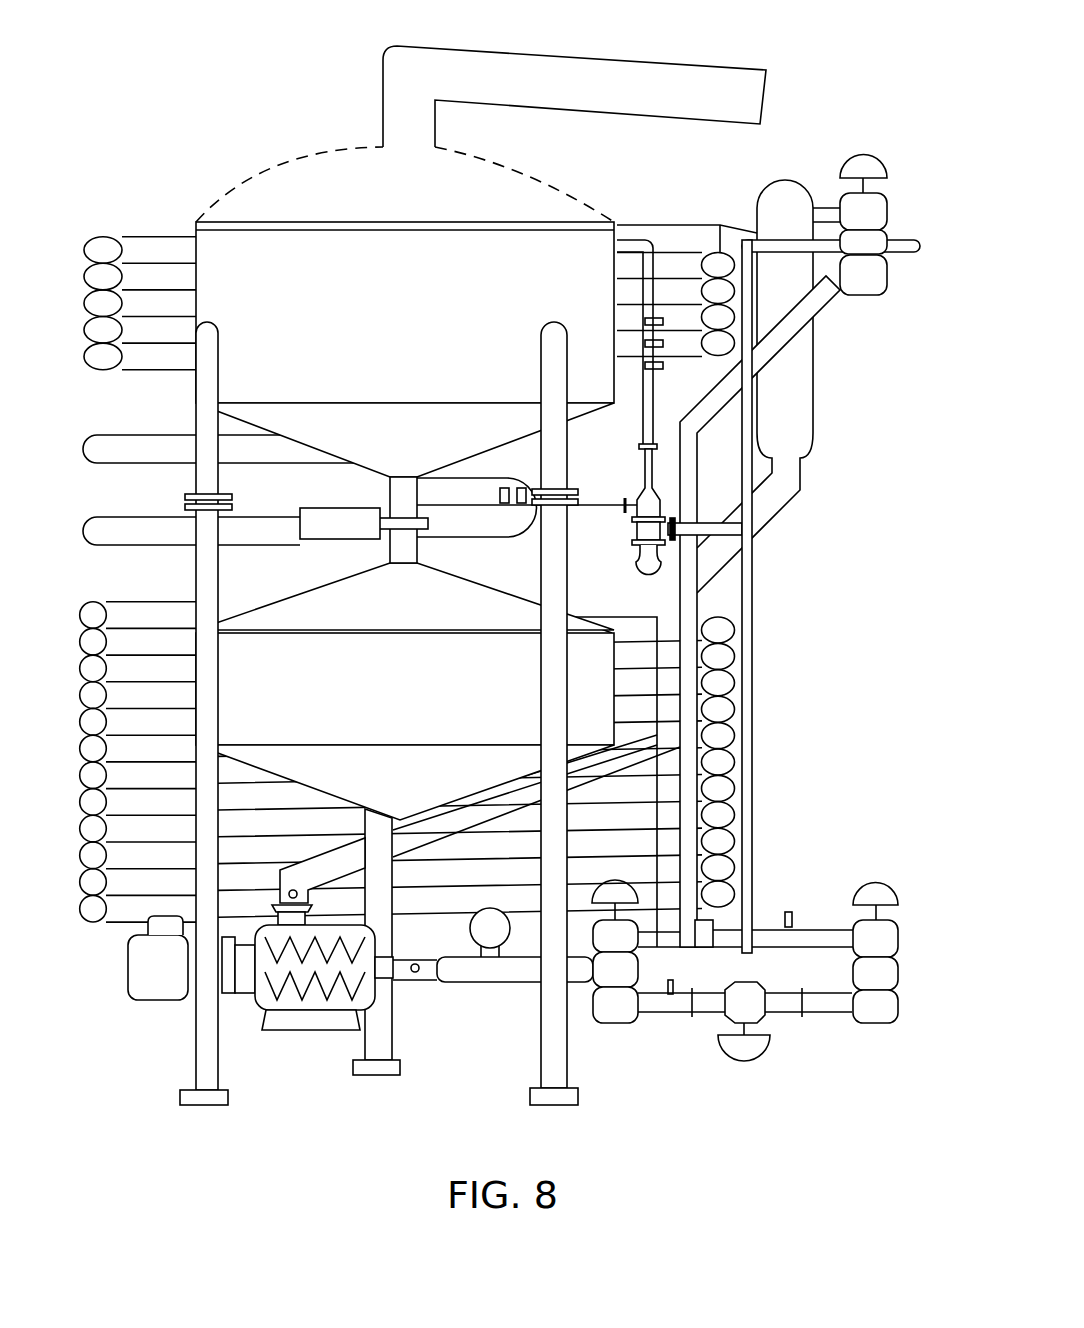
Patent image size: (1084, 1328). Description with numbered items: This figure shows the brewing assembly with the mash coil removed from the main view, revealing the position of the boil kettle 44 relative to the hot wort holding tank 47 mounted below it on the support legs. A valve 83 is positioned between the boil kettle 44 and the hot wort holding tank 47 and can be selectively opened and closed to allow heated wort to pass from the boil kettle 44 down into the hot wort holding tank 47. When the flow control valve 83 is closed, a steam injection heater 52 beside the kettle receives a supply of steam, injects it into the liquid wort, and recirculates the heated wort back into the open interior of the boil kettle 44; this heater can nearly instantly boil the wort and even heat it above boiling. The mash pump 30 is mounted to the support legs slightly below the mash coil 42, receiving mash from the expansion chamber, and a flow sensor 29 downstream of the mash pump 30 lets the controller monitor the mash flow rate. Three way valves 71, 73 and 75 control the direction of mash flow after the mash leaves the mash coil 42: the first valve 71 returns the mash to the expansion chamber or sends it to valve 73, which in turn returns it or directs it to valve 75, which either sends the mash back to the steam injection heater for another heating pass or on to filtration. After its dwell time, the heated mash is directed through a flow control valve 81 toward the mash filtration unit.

The flow sensor 29 is at (489, 953).
The mash pump 30 is at (311, 970).
The mash coil 42 is at (150, 236).
The boil kettle 44 is at (283, 251).
The hot wort holding tank 47 is at (450, 588).
The steam injection heater 52 is at (640, 535).
The first valve 71 is at (866, 288).
The valve 73 is at (624, 1012).
The valve 75 is at (865, 932).
The flow control valve 81 is at (755, 1005).
The flow control valve 83 is at (400, 519).